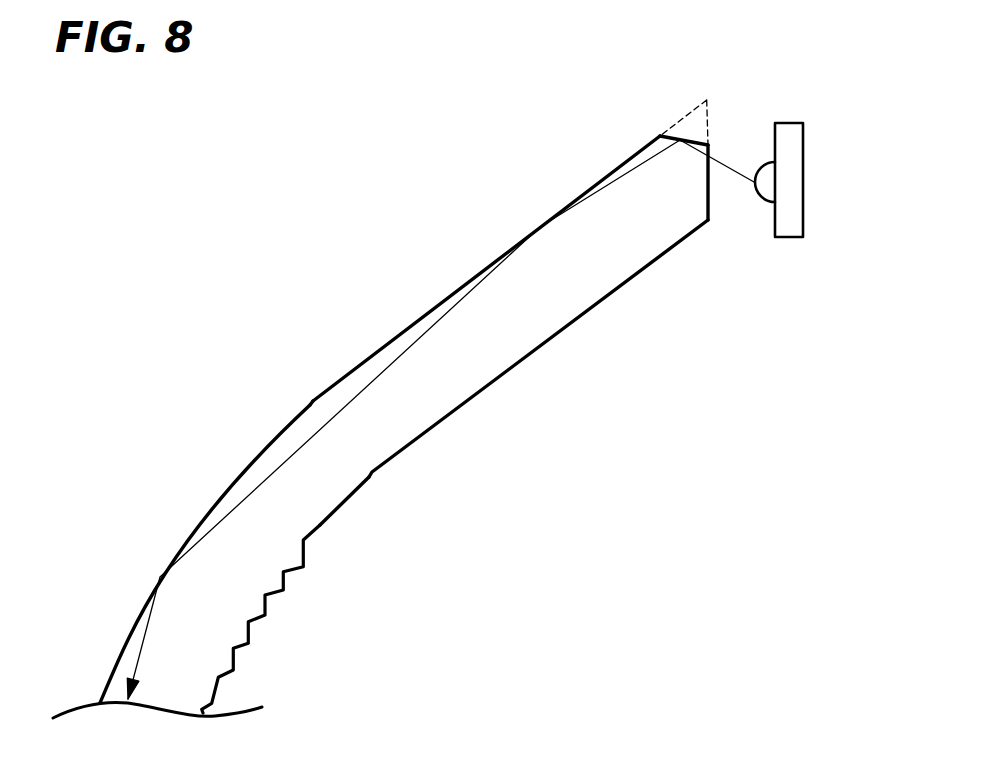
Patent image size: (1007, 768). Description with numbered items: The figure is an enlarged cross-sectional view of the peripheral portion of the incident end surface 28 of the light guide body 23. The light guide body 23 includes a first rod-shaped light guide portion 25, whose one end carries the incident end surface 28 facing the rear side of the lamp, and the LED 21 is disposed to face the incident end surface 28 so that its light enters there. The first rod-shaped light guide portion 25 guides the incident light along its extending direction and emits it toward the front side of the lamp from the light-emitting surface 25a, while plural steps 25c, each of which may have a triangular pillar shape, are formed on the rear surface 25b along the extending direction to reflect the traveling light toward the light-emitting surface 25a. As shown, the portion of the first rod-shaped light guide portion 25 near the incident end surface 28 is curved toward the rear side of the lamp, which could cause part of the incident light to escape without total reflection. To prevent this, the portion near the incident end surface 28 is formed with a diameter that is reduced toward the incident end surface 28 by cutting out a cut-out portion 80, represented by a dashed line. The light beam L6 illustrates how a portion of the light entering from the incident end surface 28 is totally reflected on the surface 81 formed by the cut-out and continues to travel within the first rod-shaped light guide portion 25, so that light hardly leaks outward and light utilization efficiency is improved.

The LED 21 is at (805, 190).
The light guide body 23 is at (260, 398).
The first rod-shaped light guide portion 25 is at (438, 425).
The light-emitting surface 25a is at (128, 633).
The rear surface 25b is at (324, 527).
The steps 25c is at (250, 644).
The incident end surface 28 is at (710, 197).
The cut-out portion 80 is at (693, 110).
The surface formed by cutting out 81 is at (673, 130).
The light beam L6 is at (400, 357).